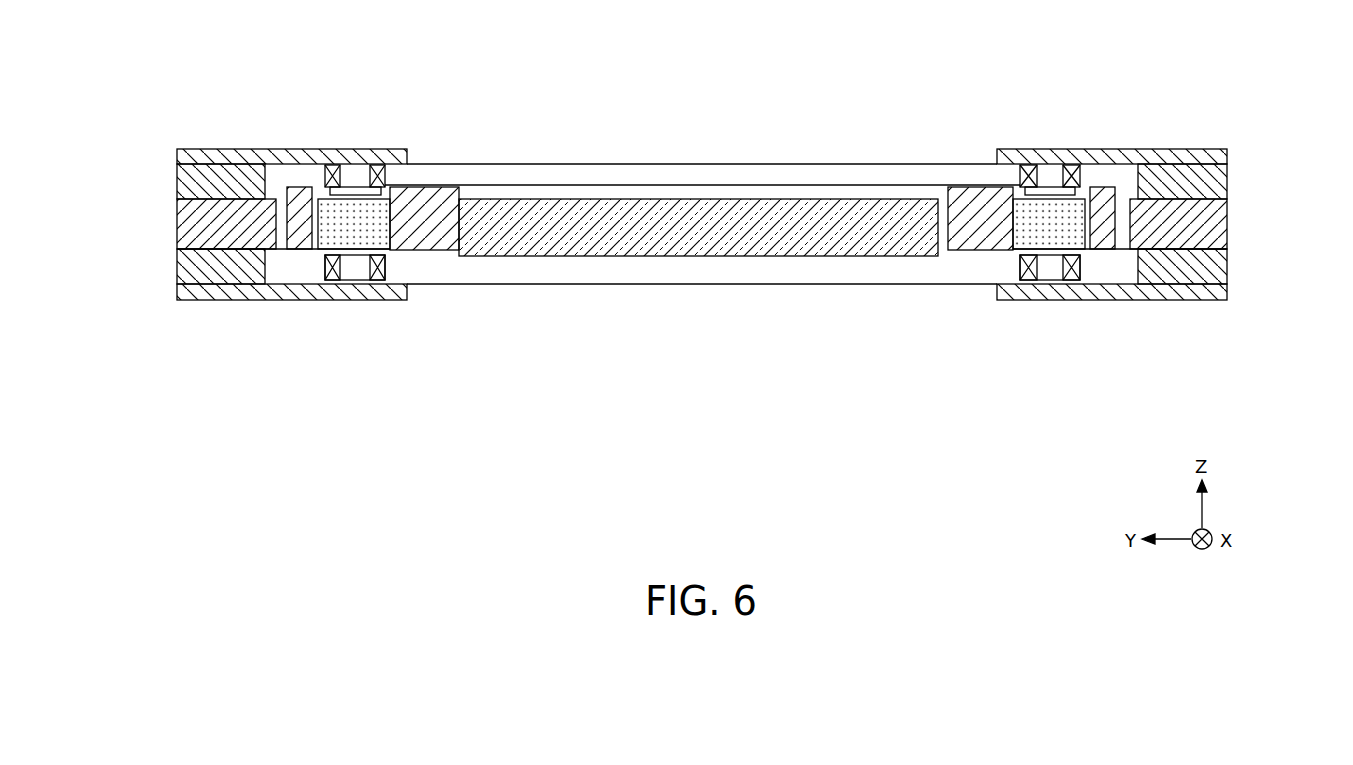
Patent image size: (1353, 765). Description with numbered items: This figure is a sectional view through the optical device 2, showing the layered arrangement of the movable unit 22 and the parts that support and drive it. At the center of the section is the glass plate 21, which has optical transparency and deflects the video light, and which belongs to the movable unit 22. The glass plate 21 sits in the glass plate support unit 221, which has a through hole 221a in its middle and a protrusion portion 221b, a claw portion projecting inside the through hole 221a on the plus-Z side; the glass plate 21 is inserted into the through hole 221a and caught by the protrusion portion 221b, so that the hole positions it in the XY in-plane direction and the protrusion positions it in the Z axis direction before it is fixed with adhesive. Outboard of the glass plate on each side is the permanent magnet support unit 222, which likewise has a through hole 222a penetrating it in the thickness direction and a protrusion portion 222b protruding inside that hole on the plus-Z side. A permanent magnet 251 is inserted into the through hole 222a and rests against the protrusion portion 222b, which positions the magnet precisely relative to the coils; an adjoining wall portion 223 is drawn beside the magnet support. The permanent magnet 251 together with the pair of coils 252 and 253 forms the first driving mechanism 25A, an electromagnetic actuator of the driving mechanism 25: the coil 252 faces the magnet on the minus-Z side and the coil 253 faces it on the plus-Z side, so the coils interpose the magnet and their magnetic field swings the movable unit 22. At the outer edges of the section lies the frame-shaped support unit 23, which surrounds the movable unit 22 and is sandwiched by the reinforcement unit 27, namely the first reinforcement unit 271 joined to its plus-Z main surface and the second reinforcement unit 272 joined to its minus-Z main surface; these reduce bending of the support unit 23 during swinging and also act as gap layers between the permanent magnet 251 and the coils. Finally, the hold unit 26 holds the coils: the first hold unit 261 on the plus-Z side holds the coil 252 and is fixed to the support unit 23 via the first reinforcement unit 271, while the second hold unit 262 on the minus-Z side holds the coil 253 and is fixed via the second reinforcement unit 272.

The optical device 2 is at (720, 148).
The glass plate 21 is at (720, 242).
The movable unit 22 is at (943, 187).
The glass plate support unit 221 is at (691, 235).
The through hole 221a is at (449, 237).
The protrusion portion 221b is at (473, 196).
The permanent magnet support unit 222 is at (288, 187).
The through hole 222a is at (301, 250).
The protrusion portion 222b is at (355, 191).
The second side wall portion 223 is at (1103, 190).
The support unit 23 is at (190, 225).
The driving mechanism 25 is at (701, 210).
The first driving mechanism 25A is at (701, 210).
The permanent magnet 251 is at (378, 226).
The coil 252 is at (375, 173).
The coil 253 is at (355, 272).
The hold unit 26 is at (714, 224).
The first hold unit 261 is at (212, 157).
The second hold unit 262 is at (200, 293).
The reinforcement unit 27 is at (699, 229).
The first reinforcement unit 271 is at (190, 183).
The second reinforcement unit 272 is at (190, 270).